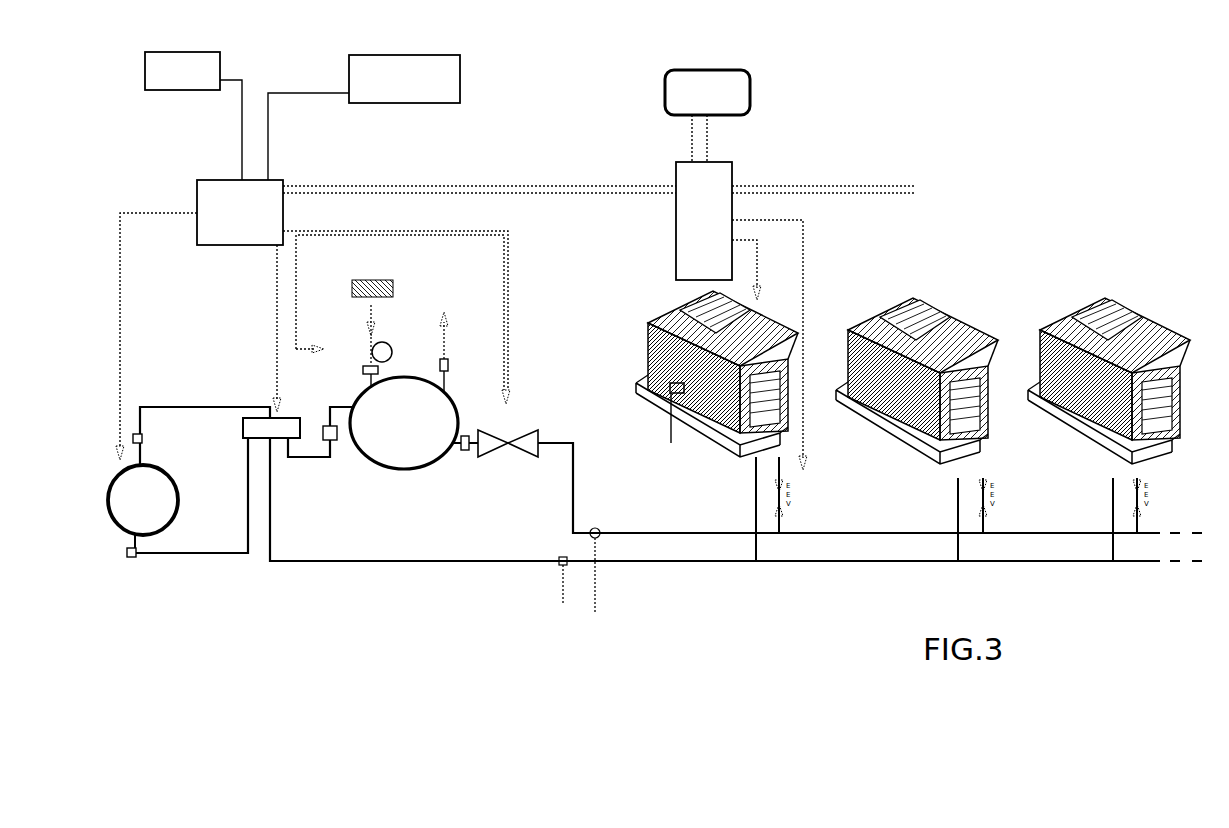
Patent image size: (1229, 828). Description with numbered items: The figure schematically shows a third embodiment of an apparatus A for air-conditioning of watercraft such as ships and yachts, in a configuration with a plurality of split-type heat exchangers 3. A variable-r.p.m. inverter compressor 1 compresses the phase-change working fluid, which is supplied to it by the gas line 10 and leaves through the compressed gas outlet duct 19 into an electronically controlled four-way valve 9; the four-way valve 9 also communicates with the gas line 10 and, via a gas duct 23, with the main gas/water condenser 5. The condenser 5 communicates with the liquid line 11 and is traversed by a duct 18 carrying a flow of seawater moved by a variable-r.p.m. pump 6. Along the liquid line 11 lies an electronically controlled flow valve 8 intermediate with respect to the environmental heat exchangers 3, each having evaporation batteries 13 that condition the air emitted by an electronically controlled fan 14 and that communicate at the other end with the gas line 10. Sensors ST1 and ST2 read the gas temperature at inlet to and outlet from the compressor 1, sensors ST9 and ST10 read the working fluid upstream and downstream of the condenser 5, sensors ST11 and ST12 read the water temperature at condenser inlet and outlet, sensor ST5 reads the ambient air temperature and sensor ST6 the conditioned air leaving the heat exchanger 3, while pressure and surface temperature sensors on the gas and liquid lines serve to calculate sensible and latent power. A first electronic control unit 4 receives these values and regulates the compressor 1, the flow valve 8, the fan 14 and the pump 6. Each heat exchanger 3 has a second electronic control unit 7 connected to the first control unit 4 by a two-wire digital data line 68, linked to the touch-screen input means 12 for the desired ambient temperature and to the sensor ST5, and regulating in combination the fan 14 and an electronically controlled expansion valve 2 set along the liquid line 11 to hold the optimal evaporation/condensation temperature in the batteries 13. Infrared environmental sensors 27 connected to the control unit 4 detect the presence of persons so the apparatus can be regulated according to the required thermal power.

The variable-r.p.m. compressor 1 is at (160, 535).
The electronically controlled expansion valve 2 is at (790, 508).
The environmental heat-exchanger 3 is at (690, 340).
The first electronic control unit 4 is at (265, 195).
The main gas/water condenser 5 is at (403, 452).
The variable-r.p.m. pump 6 is at (387, 342).
The second electronic control unit 7 is at (677, 190).
The electronically controlled flow valve 8 is at (530, 433).
The electronically controlled four-way valve 9 is at (267, 420).
The gas line 10 is at (440, 562).
The liquid line 11 is at (715, 530).
The input means 12 is at (680, 100).
The evaporation battery 13 is at (690, 375).
The electronically controlled fan 14 is at (757, 343).
The seawater duct 18 is at (372, 285).
The compressed gas outlet duct 19 is at (213, 557).
The gas duct 23 is at (310, 458).
The infrared environmental sensor 27 is at (364, 117).
The two-wire digital data line 68 is at (468, 190).
The apparatus for air-conditioning A is at (1075, 128).
The first temperature sensor ST1 is at (128, 558).
The second temperature sensor ST2 is at (133, 438).
The ambient temperature sensor ST5 is at (193, 116).
The conditioned air temperature sensor ST6 is at (655, 430).
The condenser upstream temperature sensor ST9 is at (333, 441).
The condenser downstream temperature sensor ST10 is at (466, 455).
The condenser water inlet temperature sensor ST11 is at (362, 366).
The condenser water outlet temperature sensor ST12 is at (450, 355).